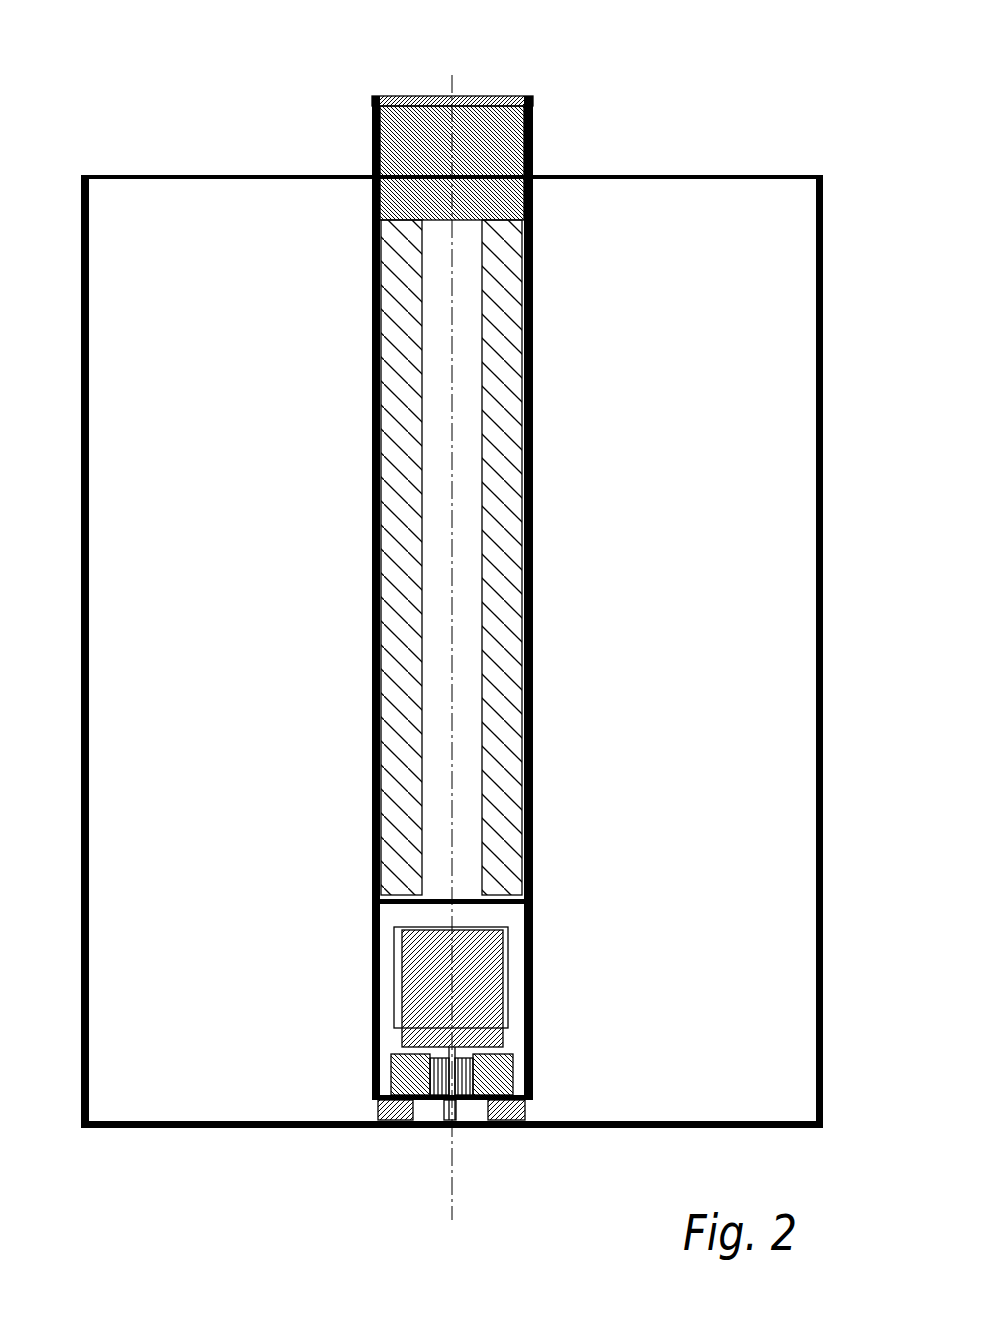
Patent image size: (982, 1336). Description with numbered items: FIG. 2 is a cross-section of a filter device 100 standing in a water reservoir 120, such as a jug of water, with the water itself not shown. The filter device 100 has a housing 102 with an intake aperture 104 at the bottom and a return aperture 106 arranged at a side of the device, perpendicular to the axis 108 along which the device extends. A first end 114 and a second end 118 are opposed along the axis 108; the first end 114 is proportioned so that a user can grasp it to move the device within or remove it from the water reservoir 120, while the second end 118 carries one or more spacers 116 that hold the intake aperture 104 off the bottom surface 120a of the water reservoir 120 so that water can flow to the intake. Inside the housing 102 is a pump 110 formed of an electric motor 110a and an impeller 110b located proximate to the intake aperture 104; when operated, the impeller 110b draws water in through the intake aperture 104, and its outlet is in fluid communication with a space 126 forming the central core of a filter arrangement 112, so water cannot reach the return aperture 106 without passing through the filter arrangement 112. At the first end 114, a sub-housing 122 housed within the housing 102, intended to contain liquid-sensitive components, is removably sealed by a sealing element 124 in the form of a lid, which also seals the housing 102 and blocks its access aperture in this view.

The filter device 100 is at (330, 103).
The housing 102 is at (371, 305).
The intake aperture 104 is at (441, 1110).
The return aperture 106 is at (552, 392).
The axis 108 is at (452, 597).
The pump 110 is at (253, 903).
The electric motor 110a is at (435, 980).
The impeller 110b is at (422, 1077).
The filter arrangement 112 is at (400, 767).
The first end 114 is at (548, 102).
The spacers 116 is at (380, 1108).
The second end 118 is at (571, 1048).
The water reservoir 120 is at (85, 172).
The bottom surface 120a is at (595, 1130).
The sub-housing 122 is at (438, 130).
The sealing element 124 is at (523, 98).
The space 126 is at (437, 434).